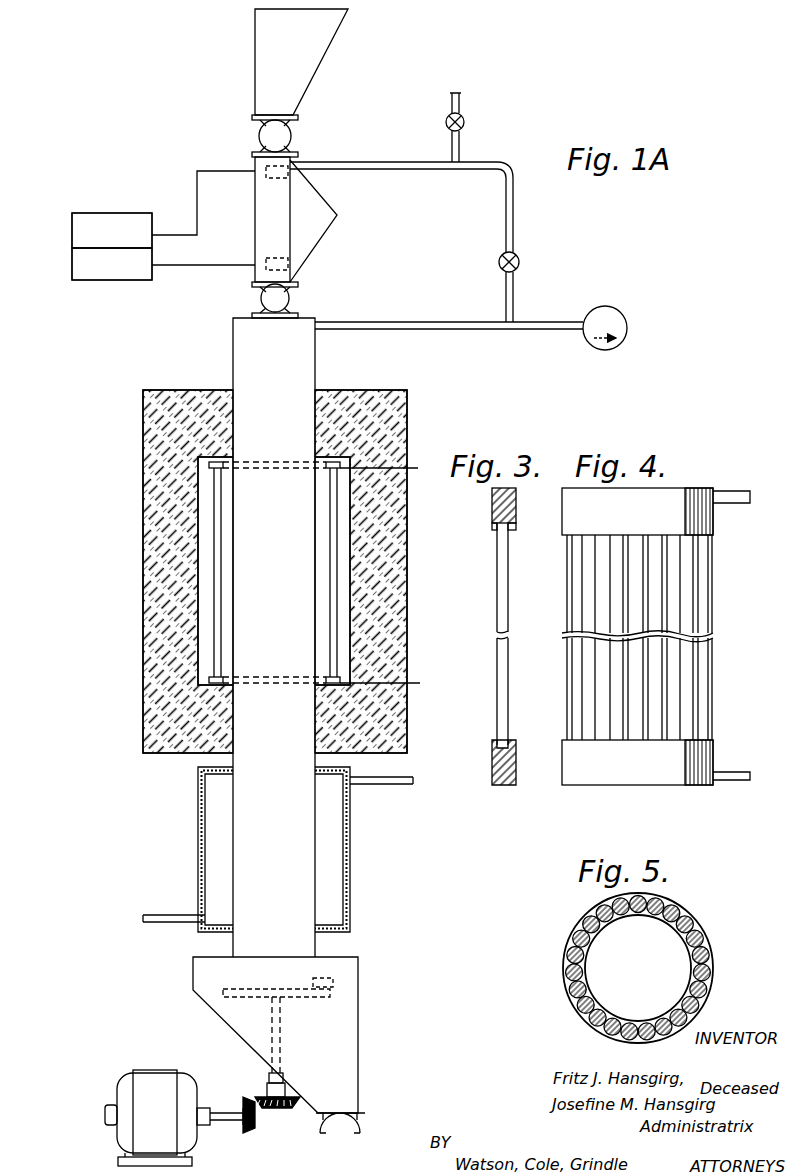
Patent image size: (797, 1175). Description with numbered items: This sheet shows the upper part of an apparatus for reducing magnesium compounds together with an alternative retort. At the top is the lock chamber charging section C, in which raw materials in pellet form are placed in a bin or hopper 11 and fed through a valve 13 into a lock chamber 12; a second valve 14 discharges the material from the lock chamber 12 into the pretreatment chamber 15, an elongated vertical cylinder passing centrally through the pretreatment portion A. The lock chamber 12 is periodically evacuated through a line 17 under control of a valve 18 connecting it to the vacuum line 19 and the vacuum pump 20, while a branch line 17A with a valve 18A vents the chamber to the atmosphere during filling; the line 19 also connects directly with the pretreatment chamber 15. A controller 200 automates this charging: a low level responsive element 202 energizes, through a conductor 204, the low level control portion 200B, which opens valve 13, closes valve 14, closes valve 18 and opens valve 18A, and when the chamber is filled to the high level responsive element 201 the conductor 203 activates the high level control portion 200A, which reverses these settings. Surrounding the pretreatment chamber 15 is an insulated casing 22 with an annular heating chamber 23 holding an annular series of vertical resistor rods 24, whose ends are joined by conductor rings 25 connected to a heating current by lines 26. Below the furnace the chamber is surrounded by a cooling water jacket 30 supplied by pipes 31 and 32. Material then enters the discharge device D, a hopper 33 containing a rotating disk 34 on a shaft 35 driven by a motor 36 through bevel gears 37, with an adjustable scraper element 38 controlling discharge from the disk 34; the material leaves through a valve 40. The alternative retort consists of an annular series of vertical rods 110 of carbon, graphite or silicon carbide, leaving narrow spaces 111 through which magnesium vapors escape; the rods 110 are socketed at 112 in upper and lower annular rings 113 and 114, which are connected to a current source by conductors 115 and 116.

In FIG. 1A, the bin or hopper 11 is at (316, 52).
In FIG. 1A, the lock chamber 12 is at (320, 222).
In FIG. 1A, the valve 13 is at (298, 139).
In FIG. 1A, the valve 14 is at (294, 301).
In FIG. 1A, the pretreatment chamber 15 is at (246, 364).
In FIG. 1A, the line 17 is at (505, 212).
In FIG. 1A, the branch line 17A is at (453, 100).
In FIG. 1A, the valve 18 is at (500, 267).
In FIG. 1A, the valve 18A is at (465, 122).
In FIG. 1A, the vacuum line 19 is at (513, 298).
In FIG. 1A, the vacuum pump 20 is at (623, 303).
In FIG. 1A, the insulated casing 22 is at (158, 452).
In FIG. 1A, the annular internal heating chamber 23 is at (345, 585).
In FIG. 1A, the vertical resistor rods 24 is at (335, 512).
In FIG. 1A, the conductor rings 25 is at (345, 441).
In FIG. 1A, the lines 26 is at (407, 678).
In FIG. 1A, the cooling water jacket 30 is at (205, 810).
In FIG. 1A, the pipe 31 is at (173, 916).
In FIG. 1A, the pipe 32 is at (399, 786).
In FIG. 1A, the hopper 33 is at (348, 1046).
In FIG. 1A, the rotating disk 34 is at (222, 993).
In FIG. 1A, the shaft 35 is at (281, 1048).
In FIG. 1A, the motor 36 is at (157, 1075).
In FIG. 1A, the bevel gears 37 is at (250, 1100).
In FIG. 1A, the scraper element 38 is at (313, 979).
In FIG. 1A, the valve 40 is at (352, 1124).
In FIG. 1A, the electrical or electronic controller 200 is at (116, 211).
In FIG. 1A, the high level control portion 200A is at (80, 233).
In FIG. 1A, the low level control portion 200B is at (80, 265).
In FIG. 1A, the high level responsive element 201 is at (266, 180).
In FIG. 1A, the low level responsive element 202 is at (263, 262).
In FIG. 1A, the conductor 203 is at (197, 193).
In FIG. 1A, the conductor 204 is at (197, 270).
In FIG. 3, the vertically disposed rods 110 is at (500, 687).
In FIG. 4, the vertically disposed rods 110 is at (670, 595).
In FIG. 5, the vertically disposed rods 110 is at (667, 916).
In FIG. 5, the narrow spaces 111 is at (705, 960).
In FIG. 3, the socket 112 is at (497, 535).
In FIG. 3, the upper annular ring 113 is at (510, 530).
In FIG. 4, the upper annular ring 113 is at (700, 521).
In FIG. 3, the lower annular ring 114 is at (496, 787).
In FIG. 4, the lower annular ring 114 is at (608, 775).
In FIG. 5, the lower annular ring 114 is at (562, 965).
In FIG. 4, the conductor 115 is at (762, 481).
In FIG. 4, the conductor 116 is at (754, 765).
In FIG. 1A, the pretreatment portion A is at (106, 614).
In FIG. 1A, the lock chamber charging section C is at (250, 134).
In FIG. 1A, the discharge chamber D is at (230, 1031).